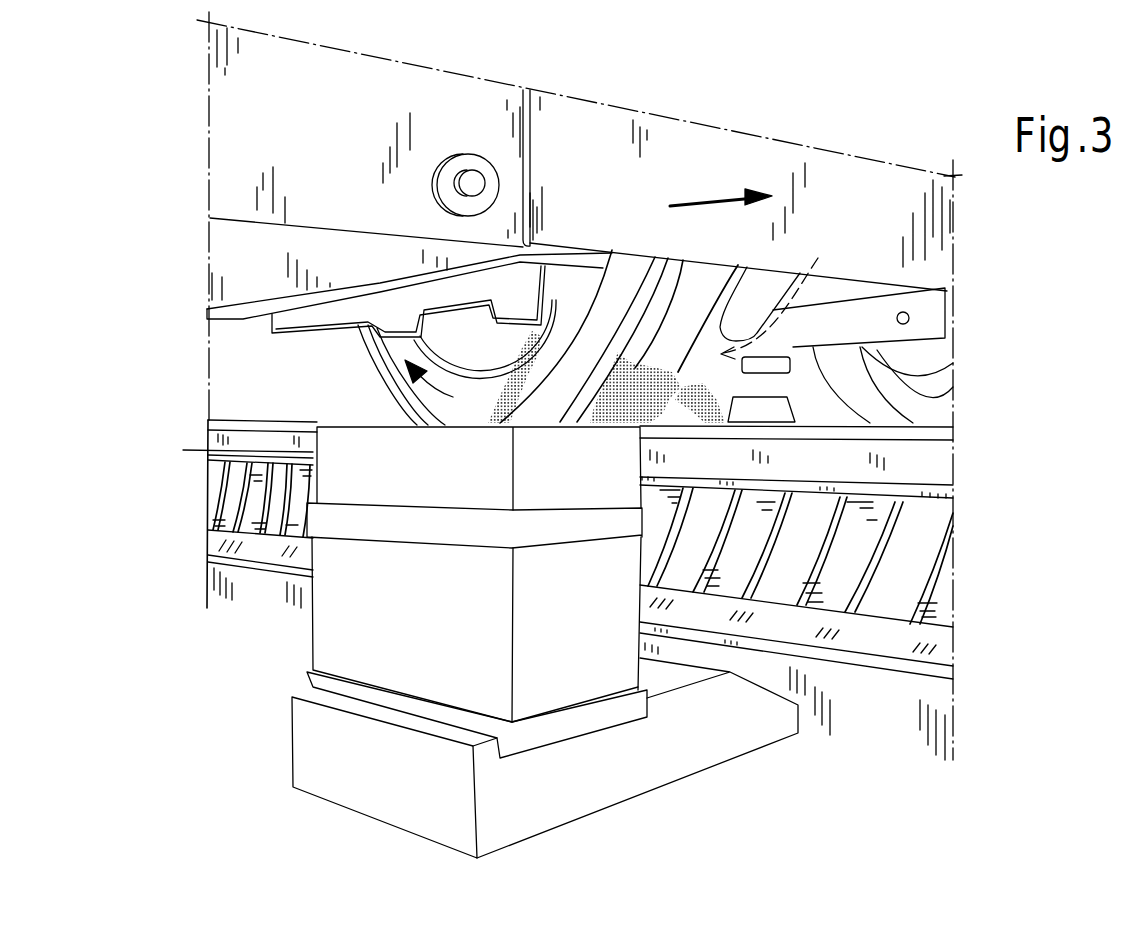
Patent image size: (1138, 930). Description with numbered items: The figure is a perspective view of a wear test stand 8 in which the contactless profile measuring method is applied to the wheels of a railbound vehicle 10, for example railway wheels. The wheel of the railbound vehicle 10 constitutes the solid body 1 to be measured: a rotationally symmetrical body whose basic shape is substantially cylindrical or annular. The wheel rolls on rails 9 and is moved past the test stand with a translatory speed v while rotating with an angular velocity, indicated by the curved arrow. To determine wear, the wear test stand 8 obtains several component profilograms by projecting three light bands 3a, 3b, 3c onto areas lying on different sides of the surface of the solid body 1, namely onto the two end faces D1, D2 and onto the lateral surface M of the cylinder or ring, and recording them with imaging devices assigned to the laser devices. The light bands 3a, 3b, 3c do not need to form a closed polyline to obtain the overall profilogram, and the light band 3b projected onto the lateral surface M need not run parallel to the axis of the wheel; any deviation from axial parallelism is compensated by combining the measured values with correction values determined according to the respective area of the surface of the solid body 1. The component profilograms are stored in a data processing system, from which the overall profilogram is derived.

The railbound vehicle 10 is at (237, 120).
The solid body 1 is at (627, 293).
The light band 3a is at (493, 396).
The light band 3b is at (623, 405).
The light band 3c is at (713, 396).
The wear test stand 8 is at (301, 624).
The rails 9 is at (920, 461).
The end face D1 is at (622, 290).
The end face D2 is at (784, 292).
The lateral surface M is at (688, 296).
The translatory speed v is at (700, 196).